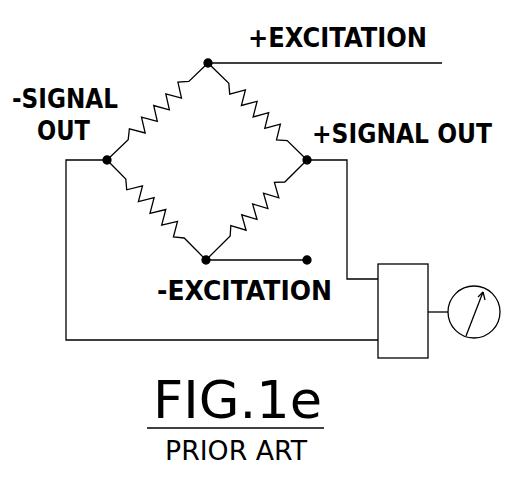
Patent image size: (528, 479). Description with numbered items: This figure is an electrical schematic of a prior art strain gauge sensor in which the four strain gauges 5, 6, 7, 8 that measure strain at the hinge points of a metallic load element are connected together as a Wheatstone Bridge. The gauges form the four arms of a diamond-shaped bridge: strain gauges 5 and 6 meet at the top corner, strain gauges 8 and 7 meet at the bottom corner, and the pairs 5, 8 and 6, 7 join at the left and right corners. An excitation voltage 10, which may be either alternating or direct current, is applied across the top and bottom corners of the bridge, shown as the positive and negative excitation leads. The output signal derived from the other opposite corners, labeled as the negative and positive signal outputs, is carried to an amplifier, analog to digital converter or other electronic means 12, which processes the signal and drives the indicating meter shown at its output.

The strain gauge 5 is at (145, 137).
The strain gauge 6 is at (256, 127).
The strain gauge 7 is at (259, 199).
The strain gauge 8 is at (148, 192).
The excitation voltage 10 is at (377, 68).
The electronic means 12 is at (418, 330).